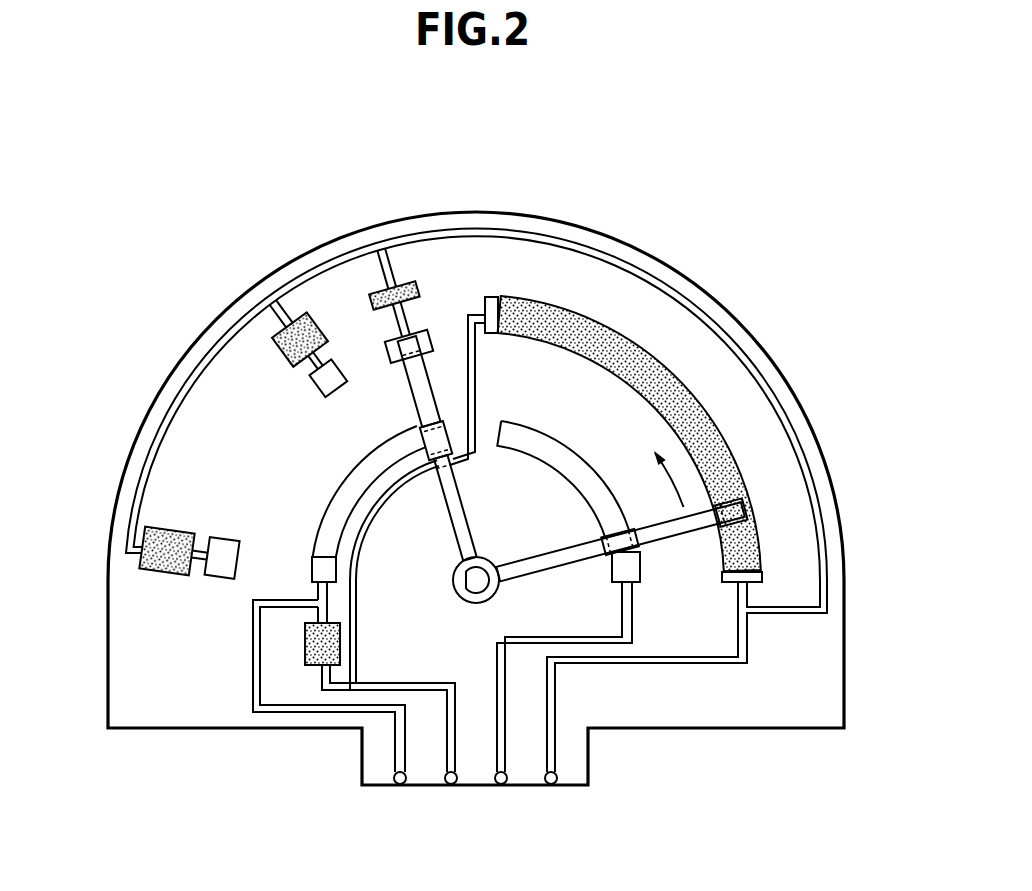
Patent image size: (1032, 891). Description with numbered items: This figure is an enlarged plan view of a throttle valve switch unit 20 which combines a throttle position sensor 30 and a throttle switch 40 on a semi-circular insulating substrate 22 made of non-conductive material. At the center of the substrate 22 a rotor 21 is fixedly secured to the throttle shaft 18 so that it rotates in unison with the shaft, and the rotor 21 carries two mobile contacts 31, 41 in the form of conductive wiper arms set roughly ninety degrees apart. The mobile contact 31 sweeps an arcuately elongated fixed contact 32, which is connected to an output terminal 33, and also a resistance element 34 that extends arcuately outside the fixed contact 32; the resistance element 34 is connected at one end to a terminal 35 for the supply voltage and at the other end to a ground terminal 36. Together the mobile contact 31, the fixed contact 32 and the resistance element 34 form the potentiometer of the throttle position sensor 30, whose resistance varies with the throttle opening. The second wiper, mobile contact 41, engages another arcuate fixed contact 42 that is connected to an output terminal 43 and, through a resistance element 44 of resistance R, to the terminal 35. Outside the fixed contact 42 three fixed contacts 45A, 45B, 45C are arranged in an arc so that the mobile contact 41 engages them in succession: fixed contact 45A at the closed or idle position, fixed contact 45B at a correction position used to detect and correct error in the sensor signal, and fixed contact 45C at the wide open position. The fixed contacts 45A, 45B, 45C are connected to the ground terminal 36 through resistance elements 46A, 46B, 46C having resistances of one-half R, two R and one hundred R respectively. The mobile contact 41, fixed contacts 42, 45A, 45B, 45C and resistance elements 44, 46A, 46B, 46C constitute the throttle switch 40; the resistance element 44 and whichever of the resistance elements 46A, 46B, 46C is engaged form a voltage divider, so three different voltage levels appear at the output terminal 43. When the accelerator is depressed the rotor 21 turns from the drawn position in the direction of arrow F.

The throttle shaft 18 is at (483, 580).
The throttle valve switch unit 20 is at (752, 303).
The rotor 21 is at (462, 600).
The insulating substrate 22 is at (830, 661).
The throttle position sensor 30 is at (701, 391).
The mobile contact 31 is at (733, 514).
The fixed contact 32 is at (597, 478).
The output terminal 33 is at (501, 784).
The resistance element 34 is at (633, 351).
The terminal 35 is at (451, 784).
The ground terminal 36 is at (551, 784).
The throttle switch 40 is at (263, 476).
The mobile contact 41 is at (412, 346).
The fixed contact 42 is at (322, 562).
The output terminal 43 is at (400, 784).
The resistance element 44 is at (313, 666).
The fixed contact 45A is at (407, 347).
The fixed contact 45B is at (327, 383).
The fixed contact 45C is at (220, 568).
The resistance element 46A is at (416, 290).
The resistance element 46B is at (281, 348).
The resistance element 46C is at (143, 562).